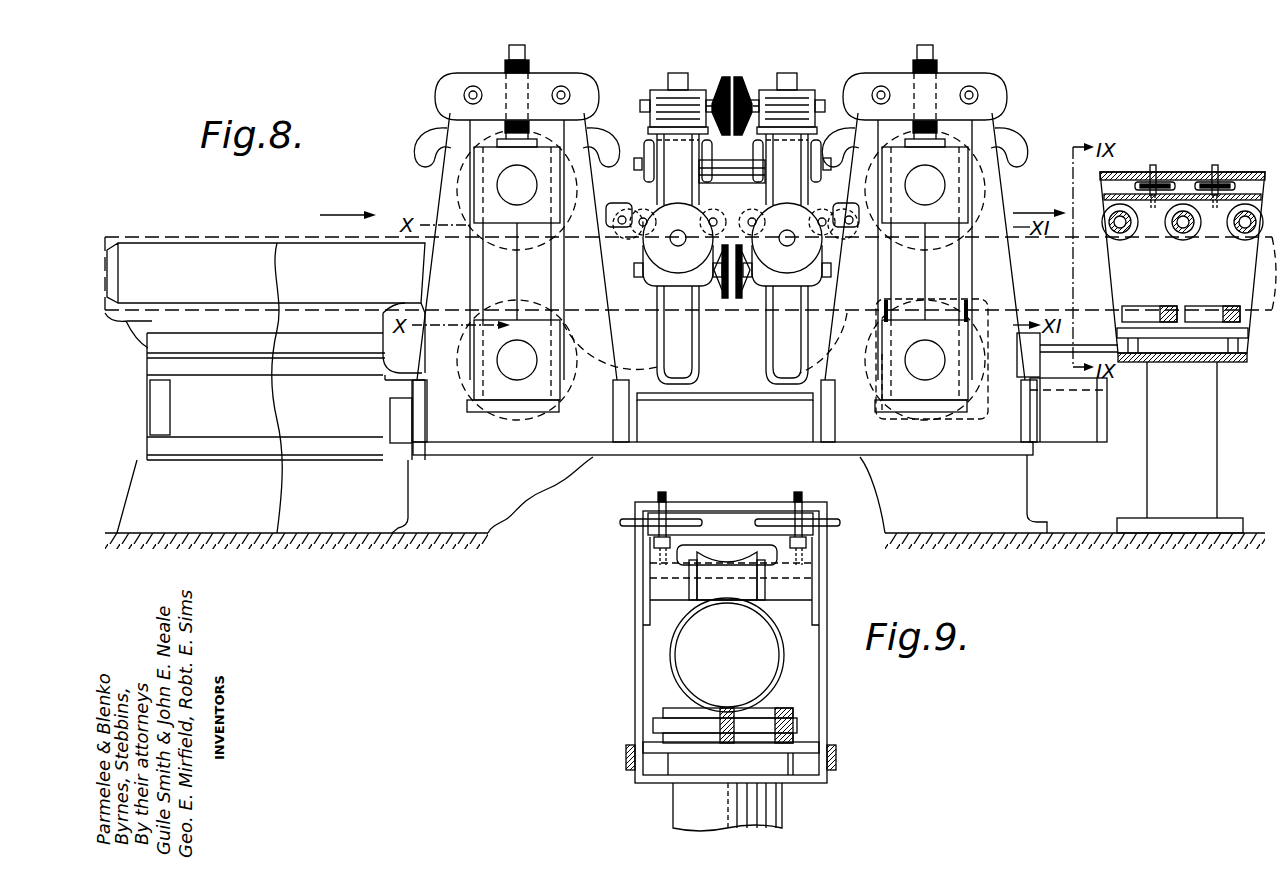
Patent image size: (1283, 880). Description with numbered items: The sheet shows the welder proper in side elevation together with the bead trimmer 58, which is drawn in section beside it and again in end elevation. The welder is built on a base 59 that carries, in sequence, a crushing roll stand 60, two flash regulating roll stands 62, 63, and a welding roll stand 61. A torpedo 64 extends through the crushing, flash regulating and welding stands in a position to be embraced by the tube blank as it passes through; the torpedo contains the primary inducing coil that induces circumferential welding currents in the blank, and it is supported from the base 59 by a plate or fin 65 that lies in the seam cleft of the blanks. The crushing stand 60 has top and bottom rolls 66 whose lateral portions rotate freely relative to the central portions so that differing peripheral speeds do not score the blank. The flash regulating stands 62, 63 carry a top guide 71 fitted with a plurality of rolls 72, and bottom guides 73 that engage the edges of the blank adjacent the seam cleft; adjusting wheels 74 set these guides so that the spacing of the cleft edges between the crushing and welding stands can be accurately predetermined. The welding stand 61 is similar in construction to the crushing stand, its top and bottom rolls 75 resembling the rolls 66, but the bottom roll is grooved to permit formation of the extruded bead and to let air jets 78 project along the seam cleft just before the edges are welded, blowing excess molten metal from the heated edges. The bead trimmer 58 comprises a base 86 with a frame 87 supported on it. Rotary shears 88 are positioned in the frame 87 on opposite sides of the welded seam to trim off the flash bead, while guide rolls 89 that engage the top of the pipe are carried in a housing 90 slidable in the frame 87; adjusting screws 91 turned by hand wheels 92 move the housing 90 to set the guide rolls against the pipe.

In FIG. 8, the bead trimmer 58 is at (1165, 178).
In FIG. 8, the base 59 is at (533, 482).
In FIG. 8, the crushing roll stand 60 is at (440, 208).
In FIG. 8, the welding roll stand 61 is at (988, 213).
In FIG. 8, the flash regulating roll stand 62 is at (668, 152).
In FIG. 8, the flash regulating roll stand 63 is at (781, 143).
In FIG. 8, the torpedo 64 is at (233, 257).
In FIG. 8, the plate or fin 65 is at (143, 322).
In FIG. 8, the top and bottom rolls 66 is at (565, 322).
In FIG. 8, the top guide 71 is at (650, 197).
In FIG. 8, the rolls 72 is at (642, 211).
In FIG. 8, the bottom guides 73 is at (648, 333).
In FIG. 8, the adjusting wheels 74 is at (742, 92).
In FIG. 8, the top and bottom rolls 75 is at (982, 161).
In FIG. 8, the air jets 78 is at (884, 295).
In FIG. 8, the base 86 is at (1172, 451).
In FIG. 9, the base 86 is at (773, 813).
In FIG. 8, the frame 87 is at (1240, 180).
In FIG. 9, the frame 87 is at (826, 619).
In FIG. 8, the rotary shears 88 is at (1200, 317).
In FIG. 9, the rotary shears 88 is at (654, 723).
In FIG. 8, the guide rolls 89 is at (1190, 232).
In FIG. 9, the guide rolls 89 is at (720, 573).
In FIG. 8, the housing 90 is at (1144, 184).
In FIG. 9, the housing 90 is at (660, 584).
In FIG. 8, the adjusting screws 91 is at (1156, 180).
In FIG. 9, the adjusting screws 91 is at (665, 497).
In FIG. 8, the hand wheels 92 is at (1178, 179).
In FIG. 9, the hand wheels 92 is at (700, 520).